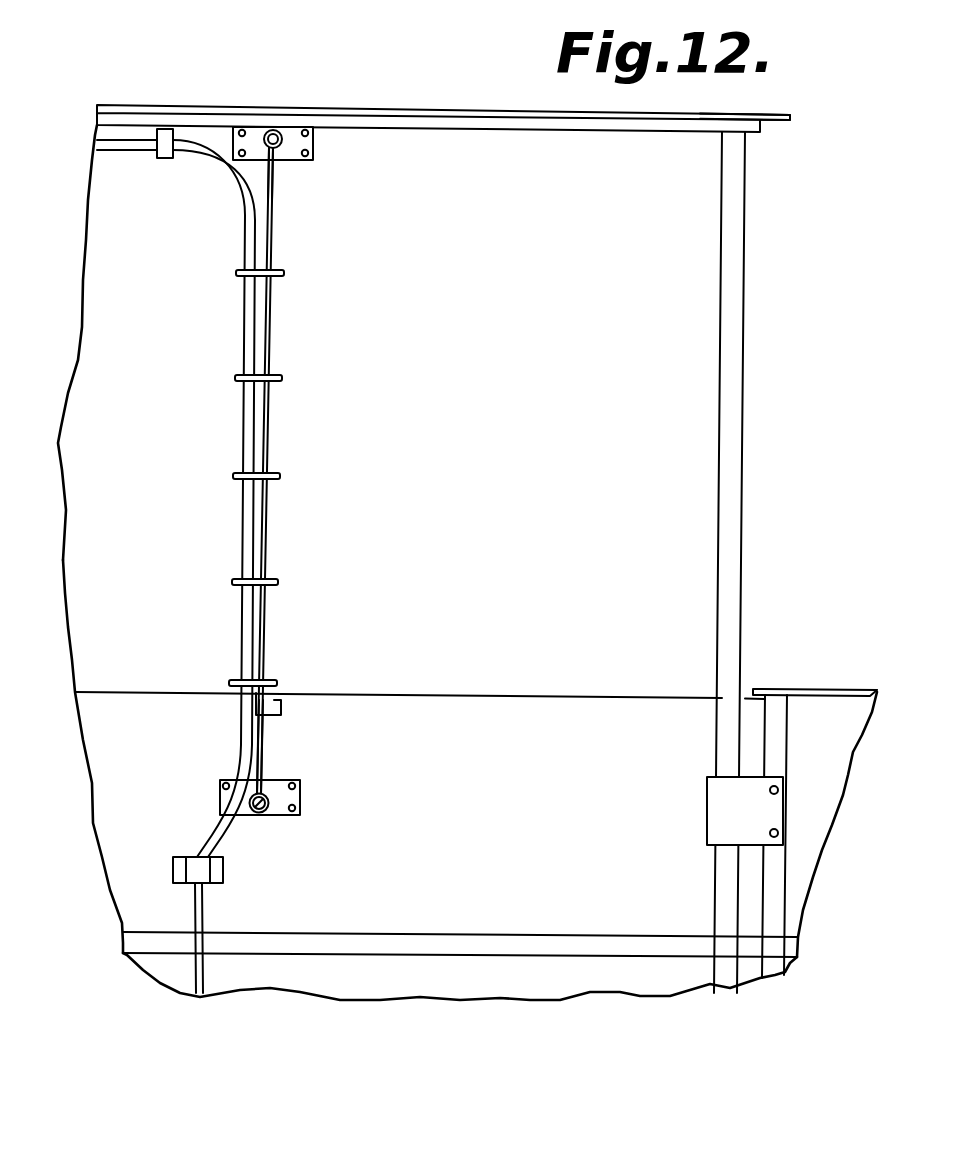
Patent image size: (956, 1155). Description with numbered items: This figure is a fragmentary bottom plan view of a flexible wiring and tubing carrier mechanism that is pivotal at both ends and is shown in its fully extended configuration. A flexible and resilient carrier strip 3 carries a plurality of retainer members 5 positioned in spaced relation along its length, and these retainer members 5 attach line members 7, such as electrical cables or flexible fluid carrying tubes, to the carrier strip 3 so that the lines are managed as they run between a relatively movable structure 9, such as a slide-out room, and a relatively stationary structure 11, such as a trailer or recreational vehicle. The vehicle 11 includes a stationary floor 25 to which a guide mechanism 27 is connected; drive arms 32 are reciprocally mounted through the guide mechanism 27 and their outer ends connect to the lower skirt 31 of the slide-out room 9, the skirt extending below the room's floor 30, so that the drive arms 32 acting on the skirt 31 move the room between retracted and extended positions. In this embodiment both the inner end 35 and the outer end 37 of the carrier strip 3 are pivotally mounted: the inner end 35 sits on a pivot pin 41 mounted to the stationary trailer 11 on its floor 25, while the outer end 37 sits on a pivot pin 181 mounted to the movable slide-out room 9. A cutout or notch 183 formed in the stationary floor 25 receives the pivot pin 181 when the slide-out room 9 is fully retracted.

The carrier strip 3 is at (270, 503).
The retainer members 5 is at (284, 380).
The line members 7 is at (271, 333).
The movable structure 9 is at (743, 126).
The stationary structure 11 is at (100, 785).
The stationary floor 25 is at (119, 699).
The guide mechanism 27 is at (765, 813).
The floor 30 is at (92, 330).
The lower skirt 31 is at (388, 119).
The drive arms 32 is at (746, 255).
The inner end 35 is at (267, 735).
The outer end 37 is at (276, 172).
The pivot pin 41 is at (254, 815).
The pivot pin 181 is at (280, 146).
The notch 183 is at (277, 693).